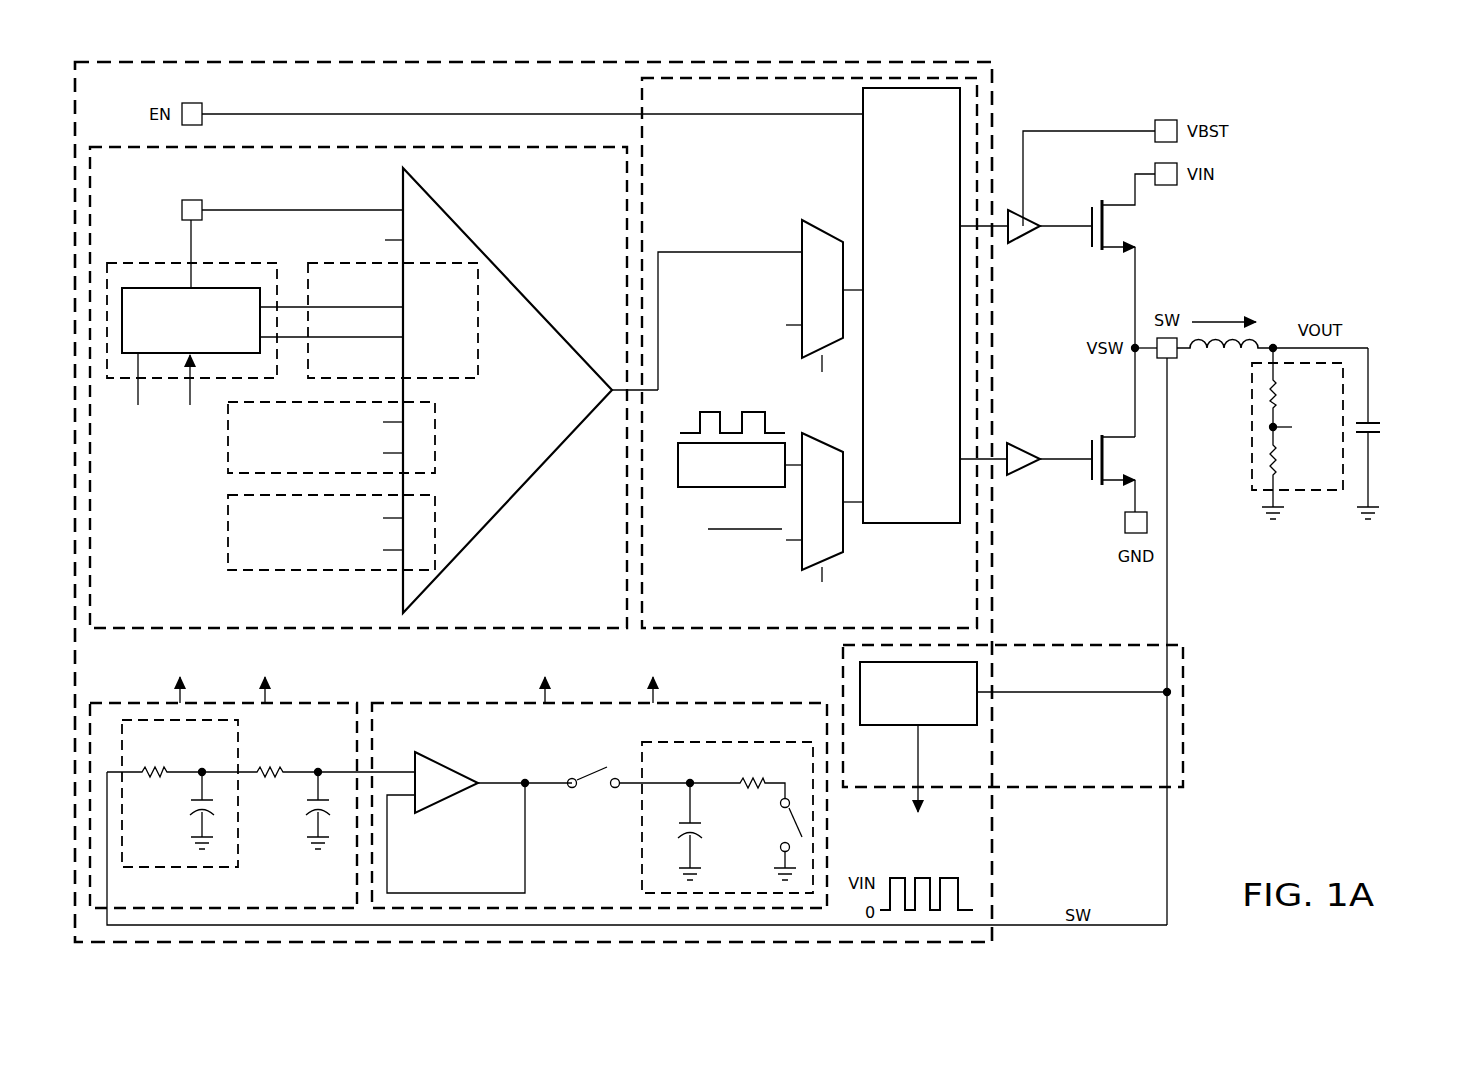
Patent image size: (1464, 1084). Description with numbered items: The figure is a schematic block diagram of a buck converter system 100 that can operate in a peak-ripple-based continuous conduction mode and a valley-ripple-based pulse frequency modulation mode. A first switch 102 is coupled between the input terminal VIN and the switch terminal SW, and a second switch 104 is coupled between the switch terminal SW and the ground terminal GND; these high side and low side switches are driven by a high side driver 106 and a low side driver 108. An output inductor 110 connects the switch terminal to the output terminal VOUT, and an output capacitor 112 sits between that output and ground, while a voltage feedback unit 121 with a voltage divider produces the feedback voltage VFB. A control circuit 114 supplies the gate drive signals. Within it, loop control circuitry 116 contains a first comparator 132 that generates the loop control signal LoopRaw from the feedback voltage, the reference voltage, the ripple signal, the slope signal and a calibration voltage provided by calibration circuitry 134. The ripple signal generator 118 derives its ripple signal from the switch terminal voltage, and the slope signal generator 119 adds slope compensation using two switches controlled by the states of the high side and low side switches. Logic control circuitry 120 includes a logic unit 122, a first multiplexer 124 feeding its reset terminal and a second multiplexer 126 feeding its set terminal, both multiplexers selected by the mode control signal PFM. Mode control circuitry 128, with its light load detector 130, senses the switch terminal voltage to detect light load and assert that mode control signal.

The converter system 100 is at (1318, 114).
The first switch 102 is at (1090, 214).
The second switch 104 is at (1090, 447).
The high side driver 106 is at (1025, 240).
The low side driver 108 is at (1025, 473).
The output inductor 110 is at (1219, 345).
The output capacitor 112 is at (1383, 428).
The control circuit 114 is at (996, 120).
The loop control circuitry 116 is at (556, 199).
The ripple signal generator 118 is at (118, 701).
The slope signal generator 119 is at (448, 701).
The logic control circuitry 120 is at (708, 605).
The voltage feedback unit 121 is at (1313, 496).
The logic unit 122 is at (863, 158).
The first multiplexer 124 is at (825, 221).
The second multiplexer 126 is at (846, 535).
The mode control circuitry 128 is at (1187, 732).
The light load detector 130 is at (945, 727).
The first comparator 132 is at (508, 280).
The calibration circuitry 134 is at (226, 288).